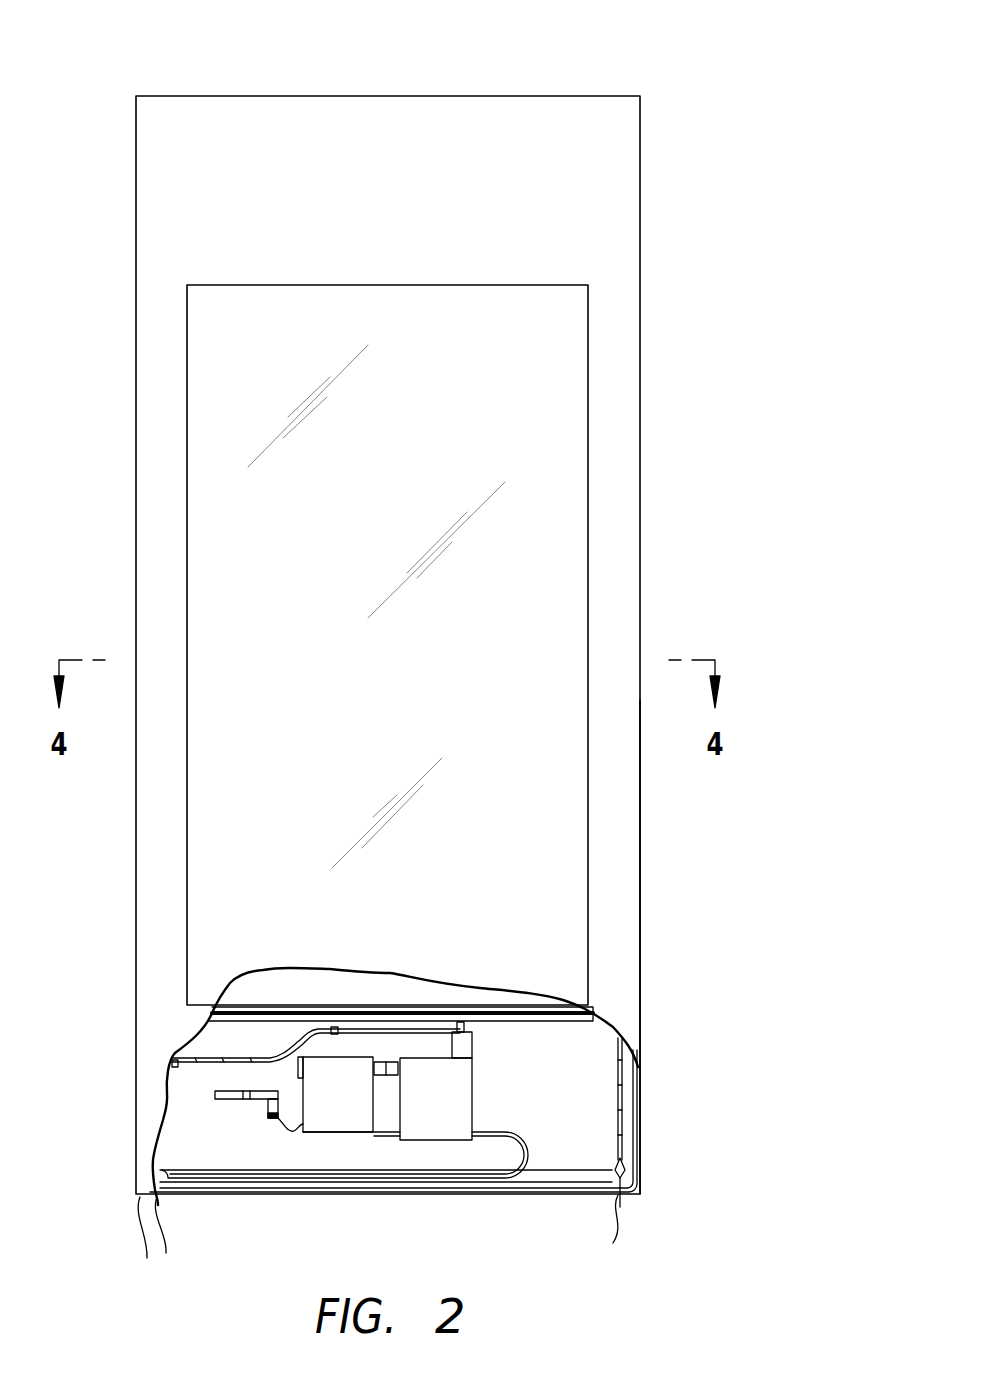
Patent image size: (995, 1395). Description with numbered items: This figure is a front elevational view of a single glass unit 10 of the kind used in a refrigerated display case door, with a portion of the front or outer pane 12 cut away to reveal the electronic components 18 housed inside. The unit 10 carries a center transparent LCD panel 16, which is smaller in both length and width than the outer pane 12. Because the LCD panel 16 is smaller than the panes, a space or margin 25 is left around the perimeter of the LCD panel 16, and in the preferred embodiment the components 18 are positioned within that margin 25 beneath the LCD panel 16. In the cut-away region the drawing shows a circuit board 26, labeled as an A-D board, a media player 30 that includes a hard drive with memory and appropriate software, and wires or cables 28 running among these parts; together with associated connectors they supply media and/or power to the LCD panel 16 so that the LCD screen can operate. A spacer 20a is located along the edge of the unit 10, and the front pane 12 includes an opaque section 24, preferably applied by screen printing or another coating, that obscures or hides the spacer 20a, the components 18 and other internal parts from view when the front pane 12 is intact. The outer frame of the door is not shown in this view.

The single glass unit 10 is at (703, 105).
The front pane 12 is at (630, 910).
The transparent LCD panel 16 is at (570, 499).
The electronic components 18 is at (274, 1216).
The spacer 20a is at (632, 1127).
The opaque section 24 is at (593, 1177).
The margin 25 is at (574, 1086).
The circuit board 26 is at (458, 1140).
The wires or cables 28 is at (209, 1176).
The media player 30 is at (360, 1132).